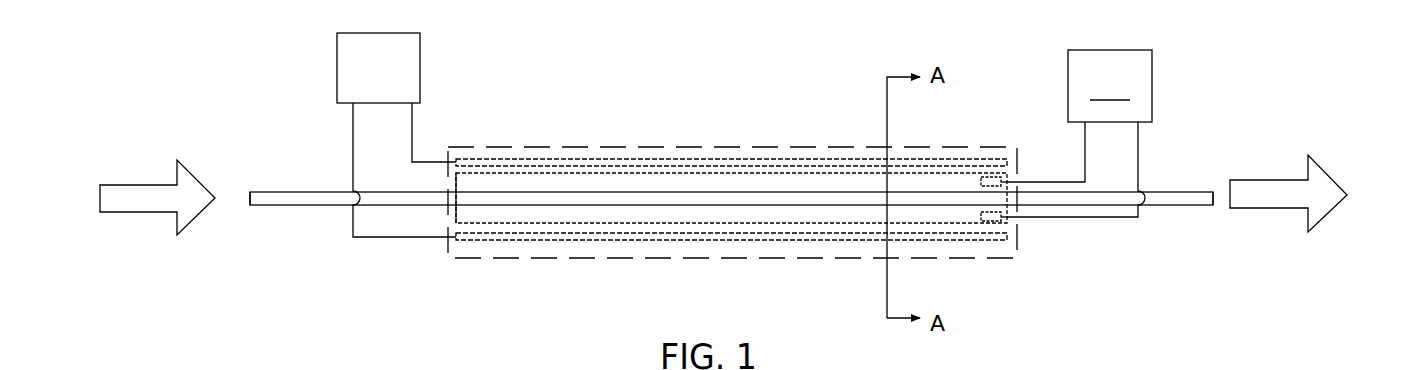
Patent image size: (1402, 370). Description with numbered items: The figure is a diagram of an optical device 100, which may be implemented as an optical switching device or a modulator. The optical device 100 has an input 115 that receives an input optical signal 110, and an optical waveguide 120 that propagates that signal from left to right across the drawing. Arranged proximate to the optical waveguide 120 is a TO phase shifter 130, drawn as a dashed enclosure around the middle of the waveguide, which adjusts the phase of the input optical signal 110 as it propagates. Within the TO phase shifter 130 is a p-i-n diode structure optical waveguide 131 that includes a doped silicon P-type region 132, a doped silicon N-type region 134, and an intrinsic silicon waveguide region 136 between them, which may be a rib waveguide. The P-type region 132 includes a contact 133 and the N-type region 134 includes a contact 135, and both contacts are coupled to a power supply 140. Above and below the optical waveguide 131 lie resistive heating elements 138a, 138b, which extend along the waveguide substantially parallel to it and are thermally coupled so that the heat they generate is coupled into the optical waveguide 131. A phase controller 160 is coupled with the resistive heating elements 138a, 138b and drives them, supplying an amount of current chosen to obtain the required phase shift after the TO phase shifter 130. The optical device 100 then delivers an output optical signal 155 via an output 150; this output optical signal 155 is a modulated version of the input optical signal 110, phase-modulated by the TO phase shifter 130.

The optical device 100 is at (306, 100).
The input optical signal 110 is at (160, 212).
The input 115 is at (305, 204).
The optical waveguide 120 is at (270, 190).
The TO phase shifter 130 is at (818, 147).
The p-i-n diode structure optical waveguide 131 is at (737, 174).
The doped silicon P-type region 132 is at (452, 178).
The contact 133 is at (995, 176).
The doped silicon N-type region 134 is at (456, 221).
The contact 135 is at (988, 224).
The waveguide region 136 is at (455, 205).
The resistive heating element 138a is at (570, 159).
The resistive heating element 138b is at (577, 240).
The power supply 140 is at (1079, 133).
The output 150 is at (1210, 182).
The output optical signal 155 is at (1278, 209).
The phase controller 160 is at (396, 135).